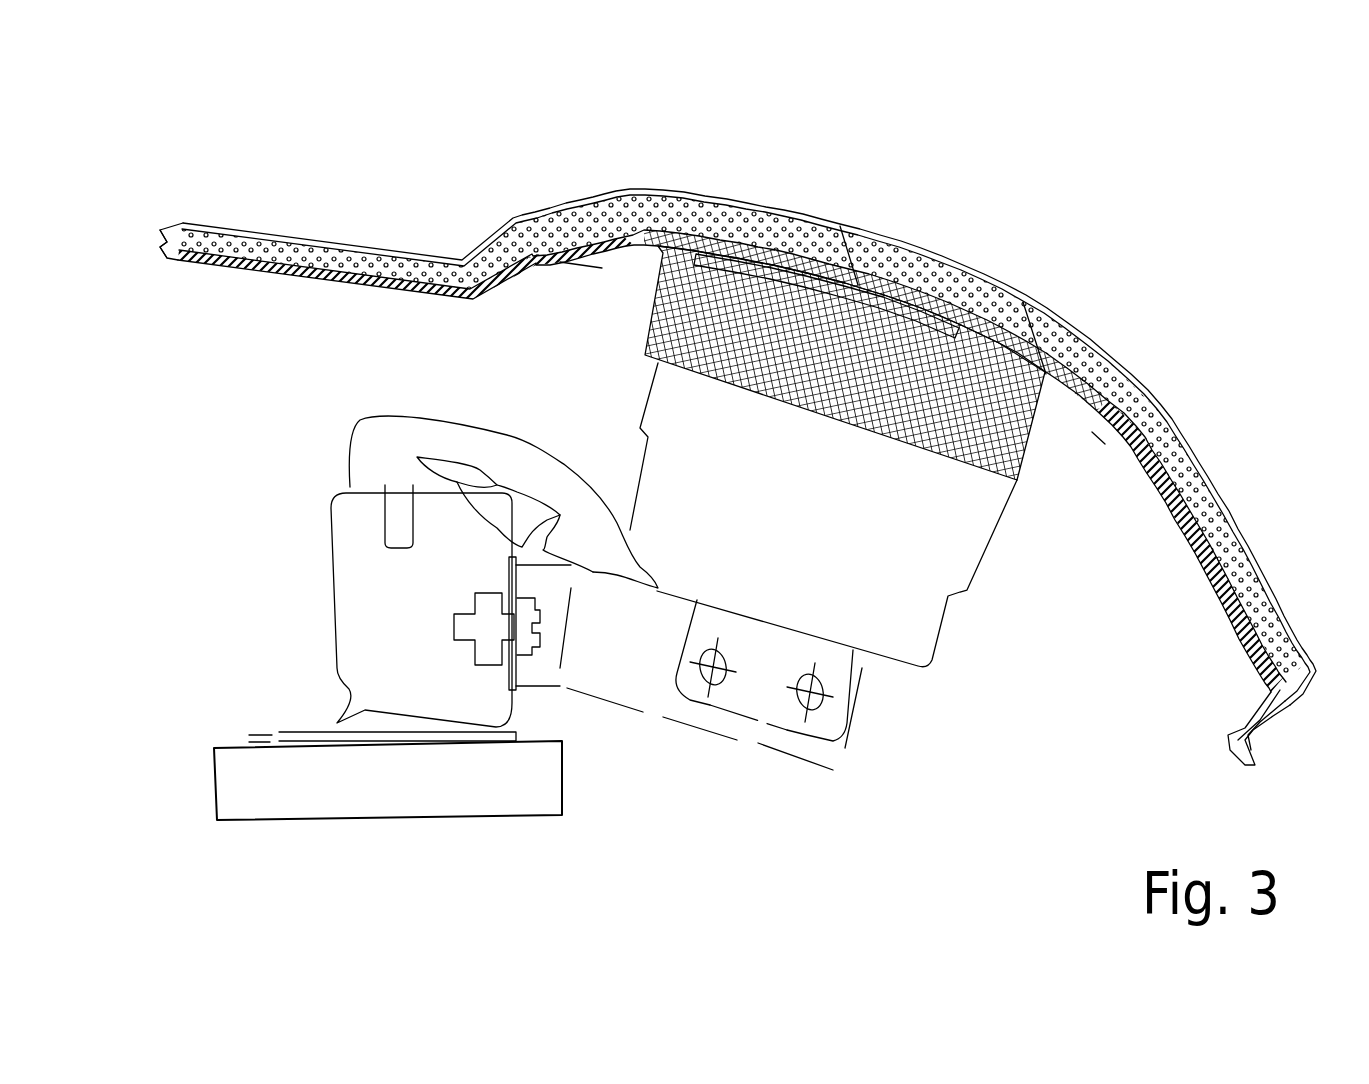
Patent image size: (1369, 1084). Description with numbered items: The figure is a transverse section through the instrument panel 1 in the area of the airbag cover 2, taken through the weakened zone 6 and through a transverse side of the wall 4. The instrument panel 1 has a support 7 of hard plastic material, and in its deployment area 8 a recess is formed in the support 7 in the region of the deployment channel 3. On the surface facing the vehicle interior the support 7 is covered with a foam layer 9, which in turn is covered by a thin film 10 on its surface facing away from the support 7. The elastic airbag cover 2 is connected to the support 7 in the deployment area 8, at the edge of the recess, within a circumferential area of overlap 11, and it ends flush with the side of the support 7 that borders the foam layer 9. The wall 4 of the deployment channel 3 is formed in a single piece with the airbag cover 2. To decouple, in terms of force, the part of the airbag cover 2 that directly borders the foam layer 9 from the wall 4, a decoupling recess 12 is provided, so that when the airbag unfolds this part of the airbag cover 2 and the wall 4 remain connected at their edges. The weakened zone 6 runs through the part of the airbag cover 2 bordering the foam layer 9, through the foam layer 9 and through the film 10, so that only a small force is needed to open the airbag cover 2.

The instrument panel 1 is at (277, 318).
The airbag cover 2 is at (680, 250).
The deployment channel 3 is at (823, 518).
The wall 4 is at (1040, 447).
The weakened zone 6 is at (917, 253).
The support 7 is at (222, 263).
The deployment area 8 is at (1023, 270).
The foam layer 9 is at (423, 265).
The film 10 is at (836, 230).
The area of overlap 11 is at (602, 268).
The decoupling recess 12 is at (690, 258).